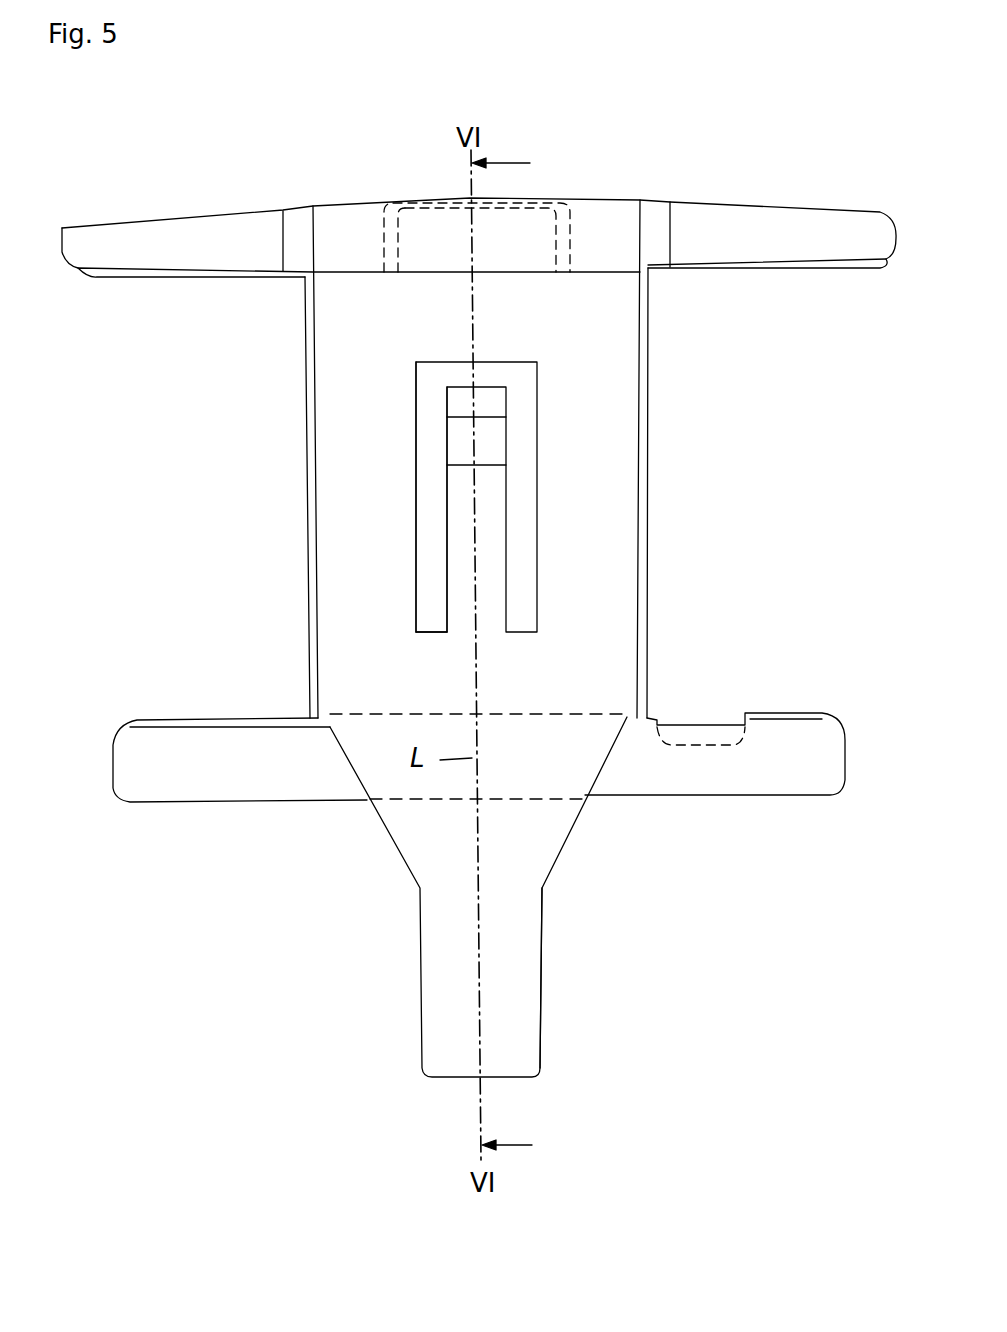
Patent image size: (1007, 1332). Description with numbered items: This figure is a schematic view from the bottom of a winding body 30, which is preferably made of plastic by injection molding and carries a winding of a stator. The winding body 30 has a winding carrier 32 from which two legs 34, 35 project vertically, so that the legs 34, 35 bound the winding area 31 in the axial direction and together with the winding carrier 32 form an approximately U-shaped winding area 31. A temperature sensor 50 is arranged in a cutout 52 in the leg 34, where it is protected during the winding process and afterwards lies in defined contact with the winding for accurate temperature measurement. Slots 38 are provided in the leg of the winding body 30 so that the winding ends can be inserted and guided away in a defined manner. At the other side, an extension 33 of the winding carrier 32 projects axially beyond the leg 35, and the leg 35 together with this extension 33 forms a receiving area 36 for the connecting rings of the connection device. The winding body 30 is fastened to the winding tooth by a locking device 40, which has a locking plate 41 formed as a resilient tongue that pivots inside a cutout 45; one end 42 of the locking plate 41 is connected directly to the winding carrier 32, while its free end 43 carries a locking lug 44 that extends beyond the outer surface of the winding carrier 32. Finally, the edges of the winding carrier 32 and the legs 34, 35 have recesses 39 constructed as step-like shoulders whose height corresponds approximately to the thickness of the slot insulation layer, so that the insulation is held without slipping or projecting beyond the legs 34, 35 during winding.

The winding body 30 is at (208, 122).
The winding area 31 is at (697, 490).
The winding carrier 32 is at (328, 468).
The extension of the winding carrier 33 is at (432, 958).
The leg 34 is at (752, 211).
The leg 35 is at (710, 790).
The receiving area 36 is at (562, 972).
The slots 38 is at (699, 714).
The recess 39 is at (175, 278).
The locking device 40 is at (547, 535).
The locking plate 41 is at (460, 535).
The fixed end of the locking plate 42 is at (445, 627).
The free end of the locking plate 43 is at (425, 390).
The locking lug 44 is at (500, 406).
The cutout 45 is at (525, 447).
The temperature sensor 50 is at (540, 233).
The cutout 52 is at (397, 202).